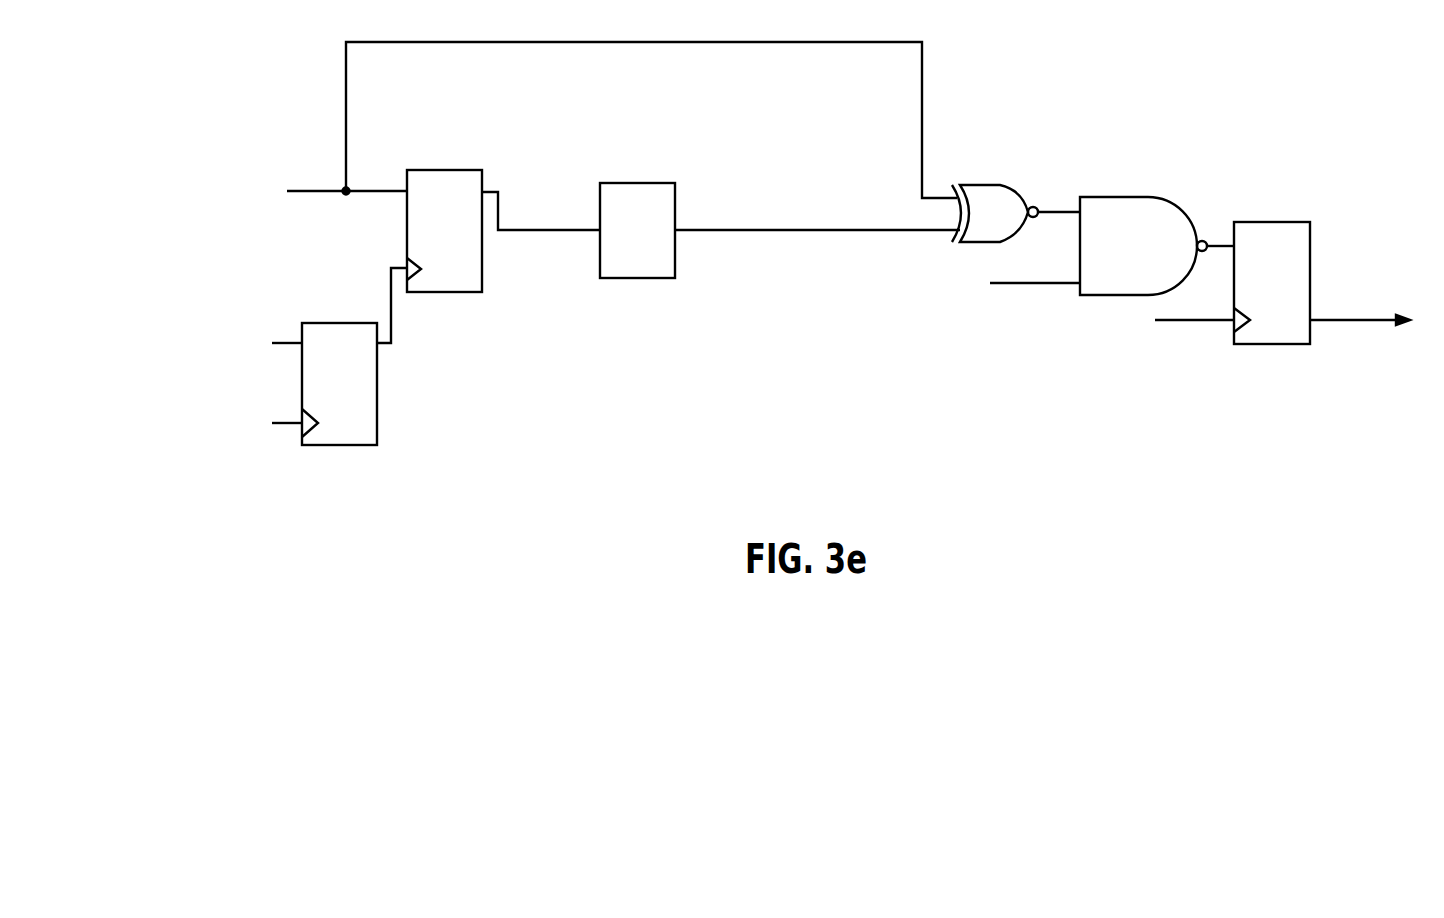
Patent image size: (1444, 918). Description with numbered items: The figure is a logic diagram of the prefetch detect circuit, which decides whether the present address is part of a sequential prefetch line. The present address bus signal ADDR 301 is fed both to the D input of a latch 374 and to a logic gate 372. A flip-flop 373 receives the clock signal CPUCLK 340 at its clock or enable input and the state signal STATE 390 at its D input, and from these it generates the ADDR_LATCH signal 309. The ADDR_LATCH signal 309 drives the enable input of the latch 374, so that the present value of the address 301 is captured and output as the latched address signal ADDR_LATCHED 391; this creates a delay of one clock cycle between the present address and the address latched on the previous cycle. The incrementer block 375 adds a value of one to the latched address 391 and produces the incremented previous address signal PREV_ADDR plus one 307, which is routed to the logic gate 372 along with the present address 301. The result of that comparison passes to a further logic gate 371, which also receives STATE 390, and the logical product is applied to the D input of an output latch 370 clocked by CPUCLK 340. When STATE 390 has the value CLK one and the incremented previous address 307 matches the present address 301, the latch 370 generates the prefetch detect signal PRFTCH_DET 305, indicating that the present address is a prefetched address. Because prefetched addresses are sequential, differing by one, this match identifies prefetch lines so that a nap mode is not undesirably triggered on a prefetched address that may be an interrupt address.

The ADDR[31:3] 301 is at (318, 190).
The ADDR_LATCH signal 309 is at (405, 267).
The latch 374 is at (447, 293).
The flip-flop 373 is at (357, 445).
The STATE 390 is at (280, 343).
The CPUCLK 340 is at (280, 423).
The ADDR_LATCHED[31:3] 391 is at (595, 230).
The block 375 is at (650, 278).
The PREV_ADDR[31:3]+1 307 is at (717, 232).
The logic gate 372 is at (972, 185).
The logic gate 371 is at (1117, 197).
The latch 370 is at (1268, 220).
The PRFTCH_DET# 305 is at (1357, 320).